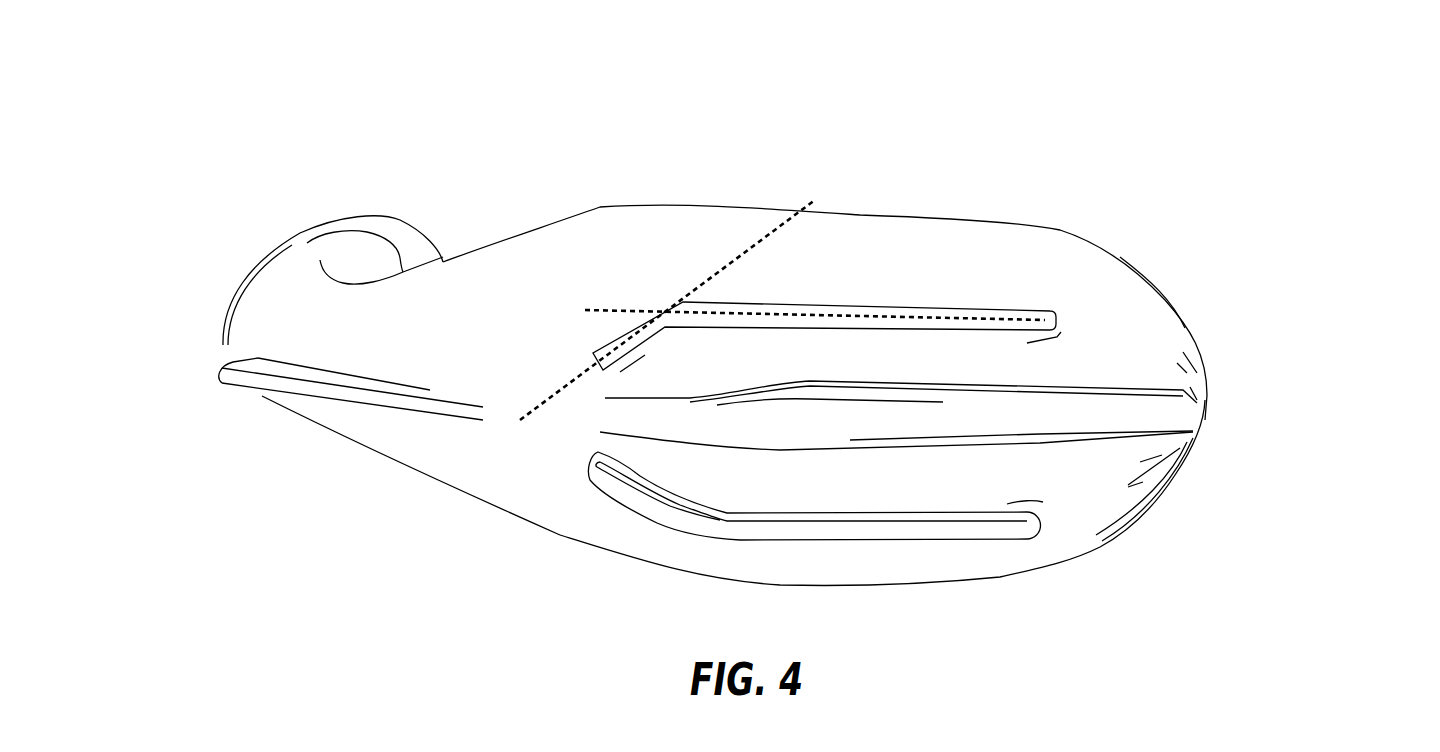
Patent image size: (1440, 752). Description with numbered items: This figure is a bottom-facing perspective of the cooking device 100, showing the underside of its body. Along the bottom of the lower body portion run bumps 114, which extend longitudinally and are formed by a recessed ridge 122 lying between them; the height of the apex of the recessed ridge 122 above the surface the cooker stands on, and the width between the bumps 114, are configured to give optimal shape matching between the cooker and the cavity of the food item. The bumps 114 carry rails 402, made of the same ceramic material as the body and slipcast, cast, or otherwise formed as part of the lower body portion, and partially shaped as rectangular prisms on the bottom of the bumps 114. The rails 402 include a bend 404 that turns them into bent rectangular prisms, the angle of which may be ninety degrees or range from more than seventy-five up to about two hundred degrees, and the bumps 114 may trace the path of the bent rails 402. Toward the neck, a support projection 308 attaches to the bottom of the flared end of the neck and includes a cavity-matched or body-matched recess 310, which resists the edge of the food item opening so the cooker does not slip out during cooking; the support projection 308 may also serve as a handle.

The device 100 is at (1080, 96).
The bumps 114 is at (1117, 327).
The recessed ridge 122 is at (1153, 414).
The support projection 308 is at (293, 400).
The cavity-matched and/or body-matched recess 310 is at (255, 358).
The rails 402 is at (897, 325).
The bend 404 is at (670, 322).